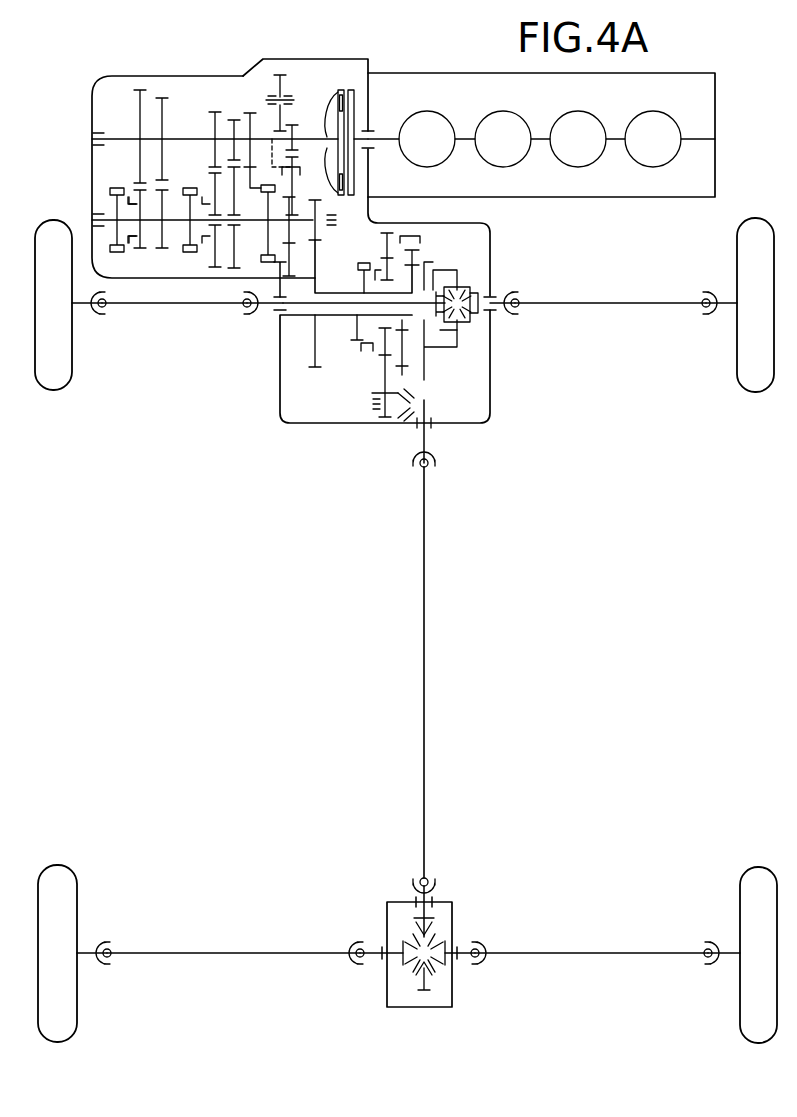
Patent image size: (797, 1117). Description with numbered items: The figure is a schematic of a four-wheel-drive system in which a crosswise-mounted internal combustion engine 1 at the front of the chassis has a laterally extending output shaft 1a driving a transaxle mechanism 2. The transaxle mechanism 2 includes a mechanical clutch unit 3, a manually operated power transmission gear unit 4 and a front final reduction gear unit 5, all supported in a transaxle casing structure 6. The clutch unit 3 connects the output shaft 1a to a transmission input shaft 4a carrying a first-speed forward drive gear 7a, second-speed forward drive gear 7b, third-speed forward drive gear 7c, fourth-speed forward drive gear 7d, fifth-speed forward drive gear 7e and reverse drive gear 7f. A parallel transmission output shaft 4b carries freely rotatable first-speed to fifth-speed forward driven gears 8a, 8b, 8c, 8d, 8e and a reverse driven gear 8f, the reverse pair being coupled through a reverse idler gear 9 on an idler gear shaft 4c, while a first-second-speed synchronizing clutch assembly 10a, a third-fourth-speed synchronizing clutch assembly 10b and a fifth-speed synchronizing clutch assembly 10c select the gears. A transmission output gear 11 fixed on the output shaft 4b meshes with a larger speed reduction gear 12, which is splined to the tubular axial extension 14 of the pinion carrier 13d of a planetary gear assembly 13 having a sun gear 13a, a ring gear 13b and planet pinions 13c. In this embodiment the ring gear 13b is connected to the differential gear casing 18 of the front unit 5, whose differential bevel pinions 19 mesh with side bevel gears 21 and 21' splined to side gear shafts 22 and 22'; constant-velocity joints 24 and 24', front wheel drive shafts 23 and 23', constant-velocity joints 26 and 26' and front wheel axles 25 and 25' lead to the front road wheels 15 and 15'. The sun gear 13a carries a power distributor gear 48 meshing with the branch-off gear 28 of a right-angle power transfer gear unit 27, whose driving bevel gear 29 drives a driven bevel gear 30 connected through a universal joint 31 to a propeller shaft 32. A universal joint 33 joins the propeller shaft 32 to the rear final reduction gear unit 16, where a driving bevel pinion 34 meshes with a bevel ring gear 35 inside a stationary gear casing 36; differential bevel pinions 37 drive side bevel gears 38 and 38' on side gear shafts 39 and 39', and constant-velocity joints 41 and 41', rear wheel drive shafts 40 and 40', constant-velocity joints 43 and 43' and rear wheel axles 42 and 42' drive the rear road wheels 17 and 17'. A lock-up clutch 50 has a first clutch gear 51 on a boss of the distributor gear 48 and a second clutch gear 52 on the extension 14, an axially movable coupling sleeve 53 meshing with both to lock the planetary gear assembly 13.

The internal combustion engine 1 is at (438, 77).
The output shaft 1a is at (392, 143).
The transaxle mechanism 2 is at (81, 96).
The mechanical clutch unit 3 is at (365, 80).
The power transmission gear unit 4 is at (106, 157).
The transmission input shaft 4a is at (95, 135).
The transmission output shaft 4b is at (96, 214).
The idler gear shaft 4c is at (288, 100).
The front final reduction gear unit 5 is at (489, 350).
The transaxle casing structure 6 is at (327, 60).
The first-speed forward drive gear 7a is at (292, 133).
The second-speed forward drive gear 7b is at (232, 118).
The third-speed forward drive gear 7c is at (213, 126).
The fourth-speed forward drive gear 7d is at (165, 100).
The fifth-speed forward drive gear 7e is at (136, 101).
The reverse drive gear 7f is at (250, 115).
The first-speed forward driven gear 8a is at (290, 172).
The second-speed forward driven gear 8b is at (233, 262).
The third-speed forward driven gear 8c is at (215, 268).
The fourth-speed forward driven gear 8d is at (162, 253).
The fifth-speed forward driven gear 8e is at (145, 250).
The reverse driven gear 8f is at (262, 258).
The reverse idler gear 9 is at (278, 80).
The first-second-speed synchronizing clutch assembly 10a is at (270, 270).
The third-fourth-speed synchronizing clutch assembly 10b is at (191, 261).
The fifth-speed synchronizing clutch assembly 10c is at (112, 260).
The transmission output gear 11 is at (323, 221).
The speed reduction gear 12 is at (313, 360).
The planetary gear assembly 13 is at (422, 229).
The sun gear 13a is at (424, 272).
The ring gear 13b is at (418, 240).
The planet pinions 13c is at (417, 257).
The pinion carrier 13d is at (426, 380).
The tubular axial extension 14 is at (328, 292).
The front road wheel 15 is at (57, 329).
The front road wheel 15' is at (745, 325).
The rear final reduction gear unit 16 is at (467, 895).
The rear road wheel 17 is at (57, 932).
The rear road wheel 17' is at (741, 943).
The differential gear casing 18 is at (447, 332).
The differential bevel pinions 19 is at (470, 286).
The differential side bevel gear 21 is at (461, 336).
The differential side bevel gear 21' is at (510, 289).
The side gear shaft 22 is at (359, 320).
The side gear shaft 22' is at (509, 322).
The front wheel drive shaft 23 is at (174, 326).
The front wheel drive shaft 23' is at (610, 325).
The constant-velocity joint 24 is at (239, 327).
The constant-velocity joint 24' is at (537, 319).
The front wheel axle 25 is at (87, 324).
The front wheel axle 25' is at (724, 325).
The constant-velocity joint 26 is at (109, 327).
The constant-velocity joint 26' is at (698, 324).
The right-angle power transfer gear unit 27 is at (362, 415).
The branch-off gear 28 is at (383, 416).
The driving bevel gear 29 is at (406, 428).
The driven bevel gear 30 is at (436, 424).
The universal joint 31 is at (432, 466).
The propeller shaft 32 is at (426, 660).
The universal joint 33 is at (412, 882).
The driving bevel pinion 34 is at (437, 918).
The bevel ring gear 35 is at (421, 992).
The stationary gear casing 36 is at (434, 897).
The differential bevel pinions 37 is at (408, 928).
The differential side bevel gear 38 is at (386, 969).
The differential side bevel gear 38' is at (465, 963).
The side gear shaft 39 is at (359, 940).
The side gear shaft 39' is at (492, 942).
The rear wheel drive shaft 40 is at (233, 975).
The rear wheel drive shaft 40' is at (591, 933).
The constant-velocity joint 41 is at (357, 970).
The constant-velocity joint 41' is at (494, 965).
The rear wheel axle 42 is at (94, 975).
The rear wheel axle 42' is at (721, 930).
The constant-velocity joint 43 is at (117, 933).
The constant-velocity joint 43' is at (691, 939).
The power distributor gear 48 is at (386, 252).
The lock-up clutch 50 is at (340, 357).
The first clutch gear 51 is at (385, 345).
The second clutch gear 52 is at (353, 323).
The coupling sleeve 53 is at (365, 350).